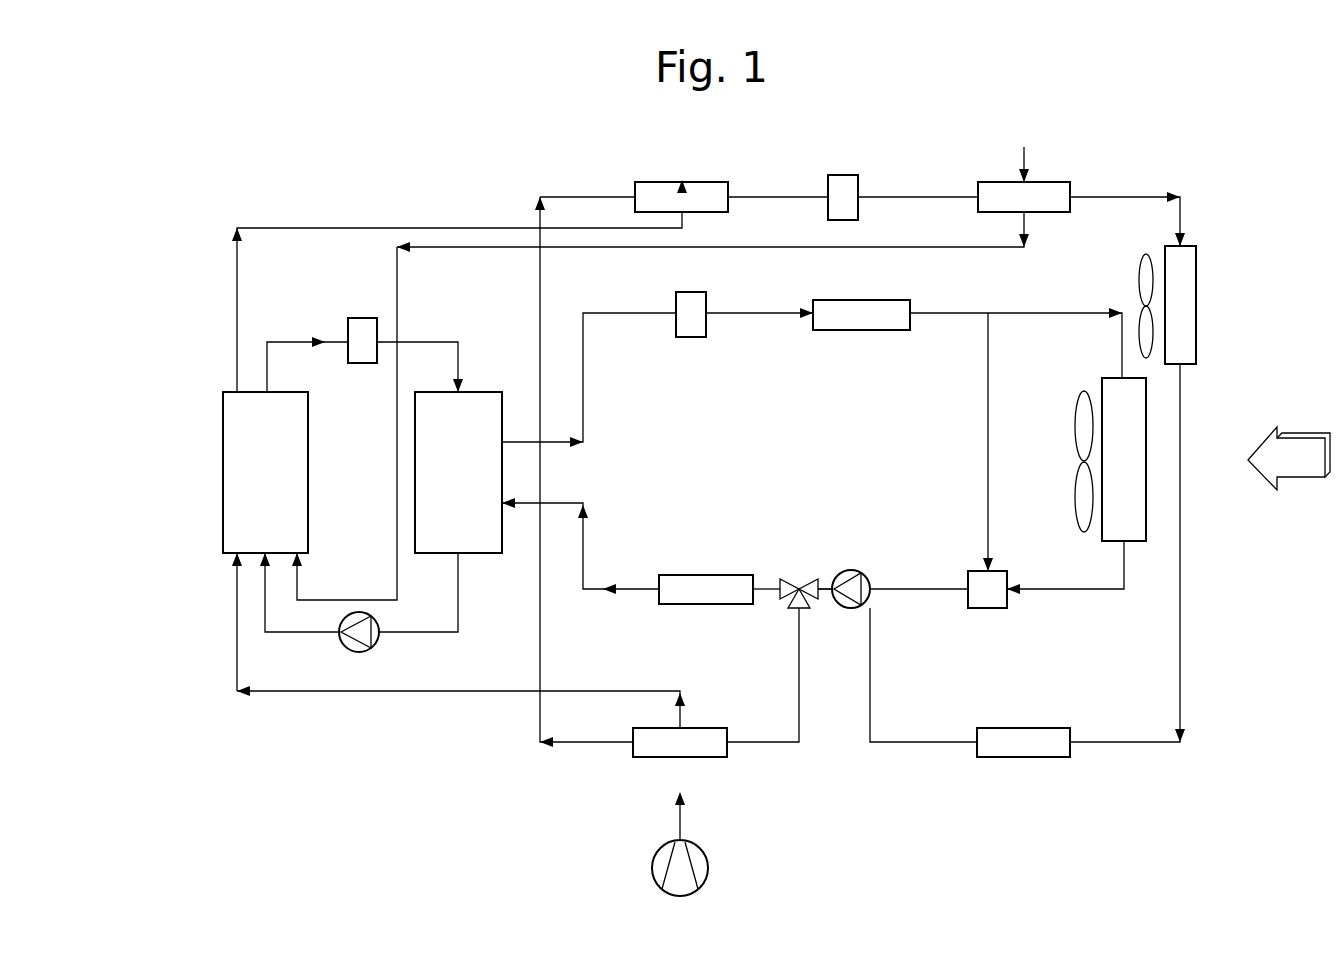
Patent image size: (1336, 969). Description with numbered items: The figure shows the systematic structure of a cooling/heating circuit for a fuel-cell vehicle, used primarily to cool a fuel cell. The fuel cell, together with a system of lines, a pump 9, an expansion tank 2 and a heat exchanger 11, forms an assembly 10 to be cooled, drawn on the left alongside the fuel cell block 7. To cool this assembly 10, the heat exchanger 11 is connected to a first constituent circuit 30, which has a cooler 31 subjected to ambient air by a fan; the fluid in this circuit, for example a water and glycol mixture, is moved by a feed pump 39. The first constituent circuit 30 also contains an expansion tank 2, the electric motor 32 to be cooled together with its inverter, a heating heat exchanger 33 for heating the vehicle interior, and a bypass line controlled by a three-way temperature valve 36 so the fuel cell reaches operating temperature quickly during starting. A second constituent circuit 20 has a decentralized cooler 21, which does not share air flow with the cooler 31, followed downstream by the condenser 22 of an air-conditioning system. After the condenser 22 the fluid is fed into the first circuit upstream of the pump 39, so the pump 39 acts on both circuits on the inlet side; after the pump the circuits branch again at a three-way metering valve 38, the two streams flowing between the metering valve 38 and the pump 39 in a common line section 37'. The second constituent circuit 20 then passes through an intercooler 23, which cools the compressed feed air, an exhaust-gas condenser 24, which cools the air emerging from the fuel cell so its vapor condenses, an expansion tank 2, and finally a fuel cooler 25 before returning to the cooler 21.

The expansion tank 2 is at (360, 365).
The fuel cell 7 is at (228, 468).
The pump 9 is at (378, 638).
The assembly 10 is at (325, 311).
The heat exchanger 11 is at (490, 553).
The second constituent circuit 20 is at (888, 168).
The cooler 21 is at (1192, 302).
The condenser 22 is at (1025, 757).
The intercooler 23 is at (645, 757).
The exhaust-gas condenser 24 is at (710, 182).
The fuel cooler 25 is at (1055, 182).
The first constituent circuit 30 is at (760, 350).
The cooler 31 is at (1140, 503).
The electric motor 32 is at (705, 575).
The heating heat exchanger 33 is at (865, 331).
The three-way temperature valve 36 is at (990, 608).
The common line section 37' is at (817, 557).
The 3-way metering valve 38 is at (790, 578).
The feed pump 39 is at (858, 571).